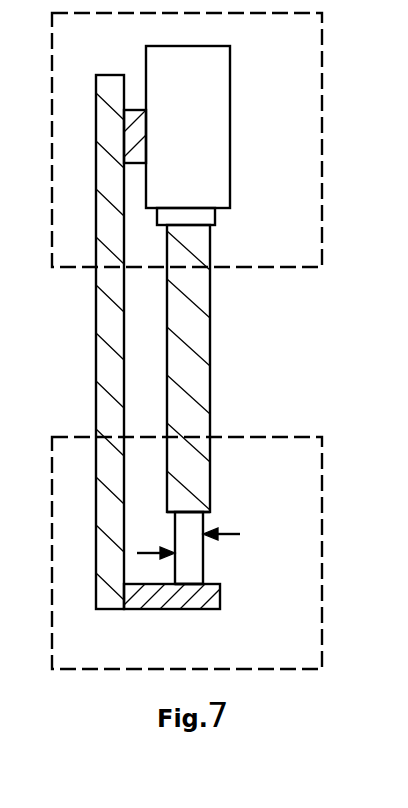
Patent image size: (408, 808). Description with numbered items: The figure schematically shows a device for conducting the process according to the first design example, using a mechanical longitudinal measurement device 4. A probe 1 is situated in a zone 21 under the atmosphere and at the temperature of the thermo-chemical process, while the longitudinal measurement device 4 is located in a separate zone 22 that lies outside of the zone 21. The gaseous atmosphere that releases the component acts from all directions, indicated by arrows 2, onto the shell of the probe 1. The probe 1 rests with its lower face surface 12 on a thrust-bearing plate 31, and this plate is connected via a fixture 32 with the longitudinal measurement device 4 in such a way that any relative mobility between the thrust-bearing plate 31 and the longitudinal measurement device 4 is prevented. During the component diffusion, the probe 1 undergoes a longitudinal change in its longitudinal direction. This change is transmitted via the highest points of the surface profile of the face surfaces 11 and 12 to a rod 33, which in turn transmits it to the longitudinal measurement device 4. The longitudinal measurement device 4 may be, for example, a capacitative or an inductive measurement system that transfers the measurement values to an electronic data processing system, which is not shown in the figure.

The probe 1 is at (190, 548).
The arrows 2 is at (147, 548).
The longitudinal measurement device 4 is at (220, 101).
The face surface 11 is at (194, 496).
The lower face surface 12 is at (184, 550).
The zone 21 is at (322, 628).
The zone 22 is at (322, 212).
The thrust-bearing plate 31 is at (160, 612).
The fixture 32 is at (108, 317).
The rod 33 is at (197, 378).